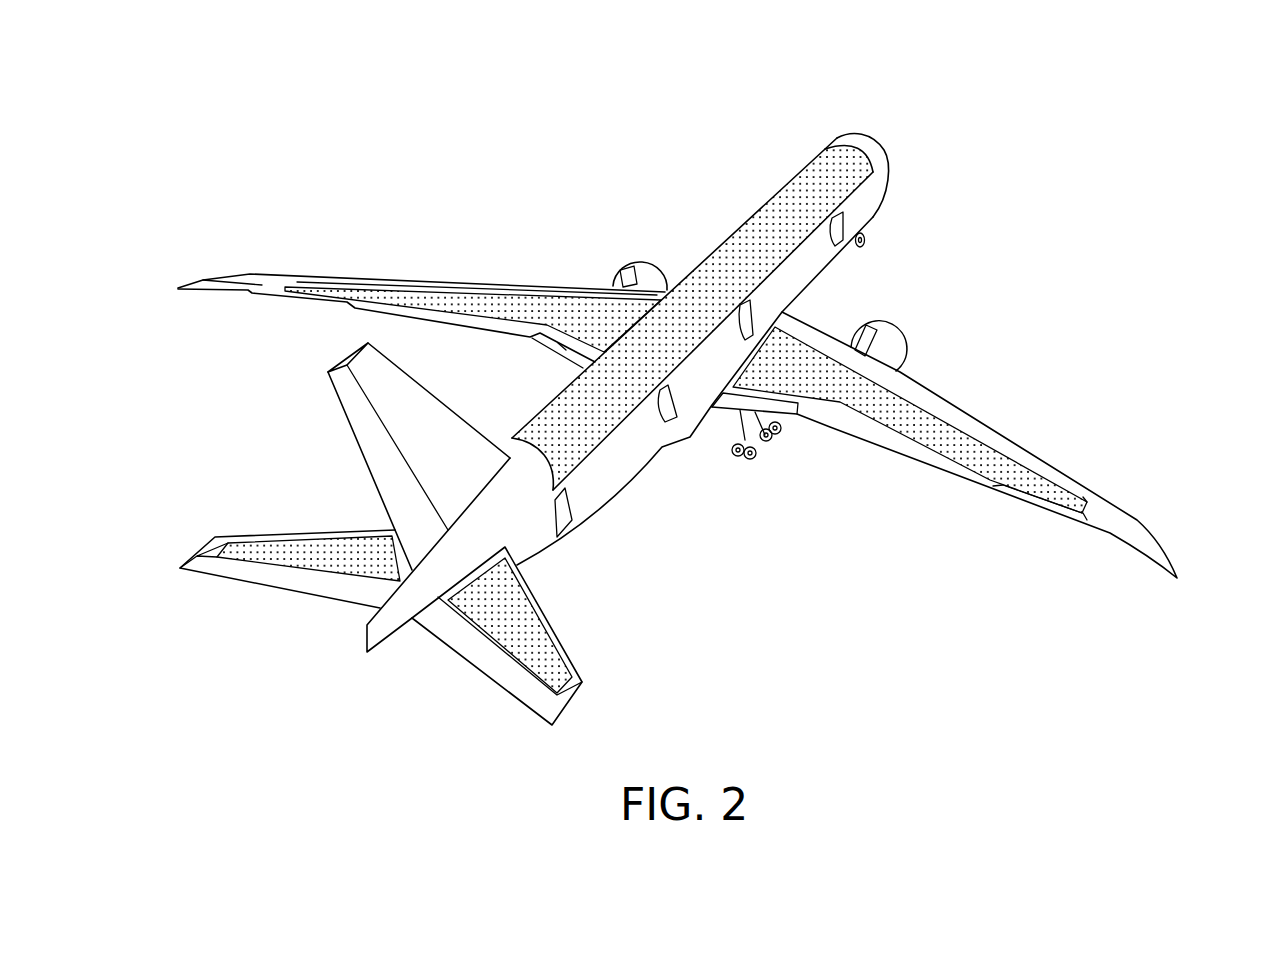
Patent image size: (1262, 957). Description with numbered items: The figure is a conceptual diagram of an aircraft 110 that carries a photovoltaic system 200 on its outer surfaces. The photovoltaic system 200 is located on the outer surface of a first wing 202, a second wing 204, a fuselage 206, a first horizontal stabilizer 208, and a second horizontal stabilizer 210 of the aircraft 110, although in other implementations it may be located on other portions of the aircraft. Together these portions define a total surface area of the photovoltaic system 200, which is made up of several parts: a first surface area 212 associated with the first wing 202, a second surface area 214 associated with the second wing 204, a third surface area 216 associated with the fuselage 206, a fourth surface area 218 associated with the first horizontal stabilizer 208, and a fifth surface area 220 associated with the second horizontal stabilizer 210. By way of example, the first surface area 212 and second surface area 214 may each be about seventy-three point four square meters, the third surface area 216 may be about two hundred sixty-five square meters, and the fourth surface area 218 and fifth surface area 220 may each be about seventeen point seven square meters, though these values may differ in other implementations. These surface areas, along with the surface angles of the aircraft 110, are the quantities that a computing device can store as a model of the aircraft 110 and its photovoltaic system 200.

The aircraft 110 is at (214, 175).
The photovoltaic system 200 is at (355, 240).
The first wing 202 is at (213, 285).
The second wing 204 is at (1152, 535).
The fuselage 206 is at (877, 182).
The first horizontal stabilizer 208 is at (208, 560).
The second horizontal stabilizer 210 is at (530, 685).
The first surface area 212 is at (480, 283).
The second surface area 214 is at (952, 438).
The third surface area 216 is at (670, 253).
The fourth surface area 218 is at (277, 552).
The fifth surface area 220 is at (552, 658).